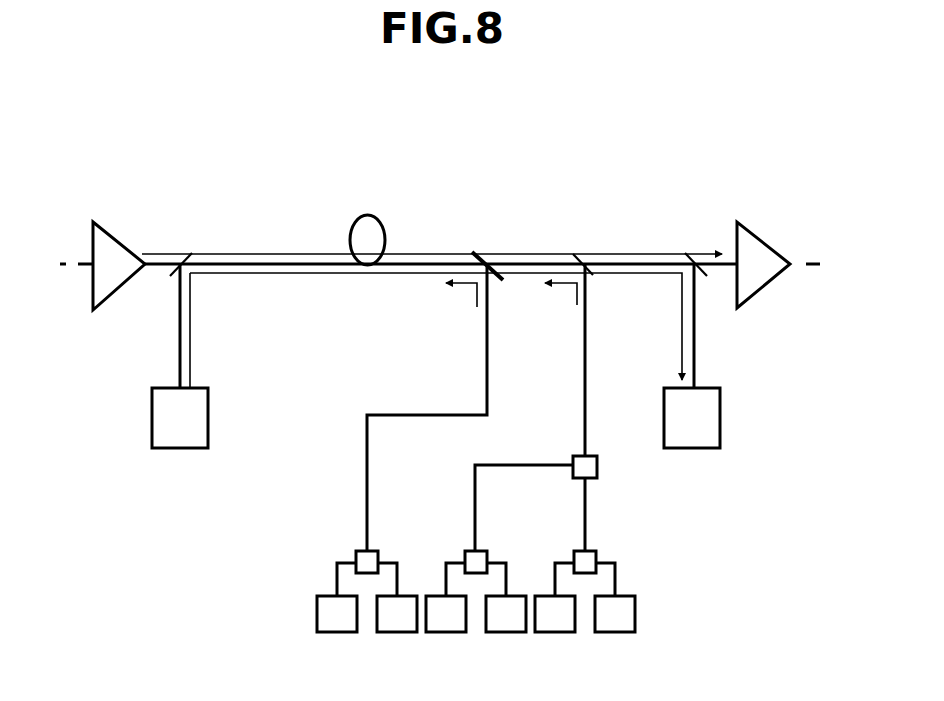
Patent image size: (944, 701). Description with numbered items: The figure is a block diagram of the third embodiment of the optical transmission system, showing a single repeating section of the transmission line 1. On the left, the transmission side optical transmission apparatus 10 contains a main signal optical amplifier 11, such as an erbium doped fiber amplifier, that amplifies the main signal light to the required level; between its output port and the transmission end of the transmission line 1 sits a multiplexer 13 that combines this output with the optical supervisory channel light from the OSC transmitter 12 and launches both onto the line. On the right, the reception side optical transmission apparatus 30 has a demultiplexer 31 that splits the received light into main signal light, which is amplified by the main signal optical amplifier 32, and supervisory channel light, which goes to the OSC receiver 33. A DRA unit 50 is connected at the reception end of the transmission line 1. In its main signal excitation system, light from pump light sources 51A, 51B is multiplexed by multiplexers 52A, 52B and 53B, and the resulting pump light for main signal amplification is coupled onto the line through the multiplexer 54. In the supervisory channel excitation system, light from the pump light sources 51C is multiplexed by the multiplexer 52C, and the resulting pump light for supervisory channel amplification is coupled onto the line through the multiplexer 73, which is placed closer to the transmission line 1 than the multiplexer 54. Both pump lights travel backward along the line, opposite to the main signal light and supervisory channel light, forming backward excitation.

The transmission line 1 is at (366, 214).
The optical transmission apparatus 10 is at (134, 163).
The main signal optical amplifier 11 is at (114, 236).
The OSC transmitter 12 is at (160, 387).
The multiplexer 13 is at (182, 258).
The optical transmission apparatus 30 is at (727, 160).
The demultiplexer 31 is at (696, 257).
The main signal optical amplifier 32 is at (763, 236).
The OSC receiver 33 is at (711, 387).
The DRA unit 50 is at (684, 642).
The pump light source 51A is at (558, 633).
The pump light source 51B is at (449, 633).
The pump light source 51C is at (340, 633).
The multiplexer 52A is at (575, 551).
The multiplexer 52B is at (465, 551).
The multiplexer 52C is at (356, 551).
The multiplexer 53B is at (578, 457).
The multiplexer 54 is at (587, 255).
The multiplexer 73 is at (483, 254).